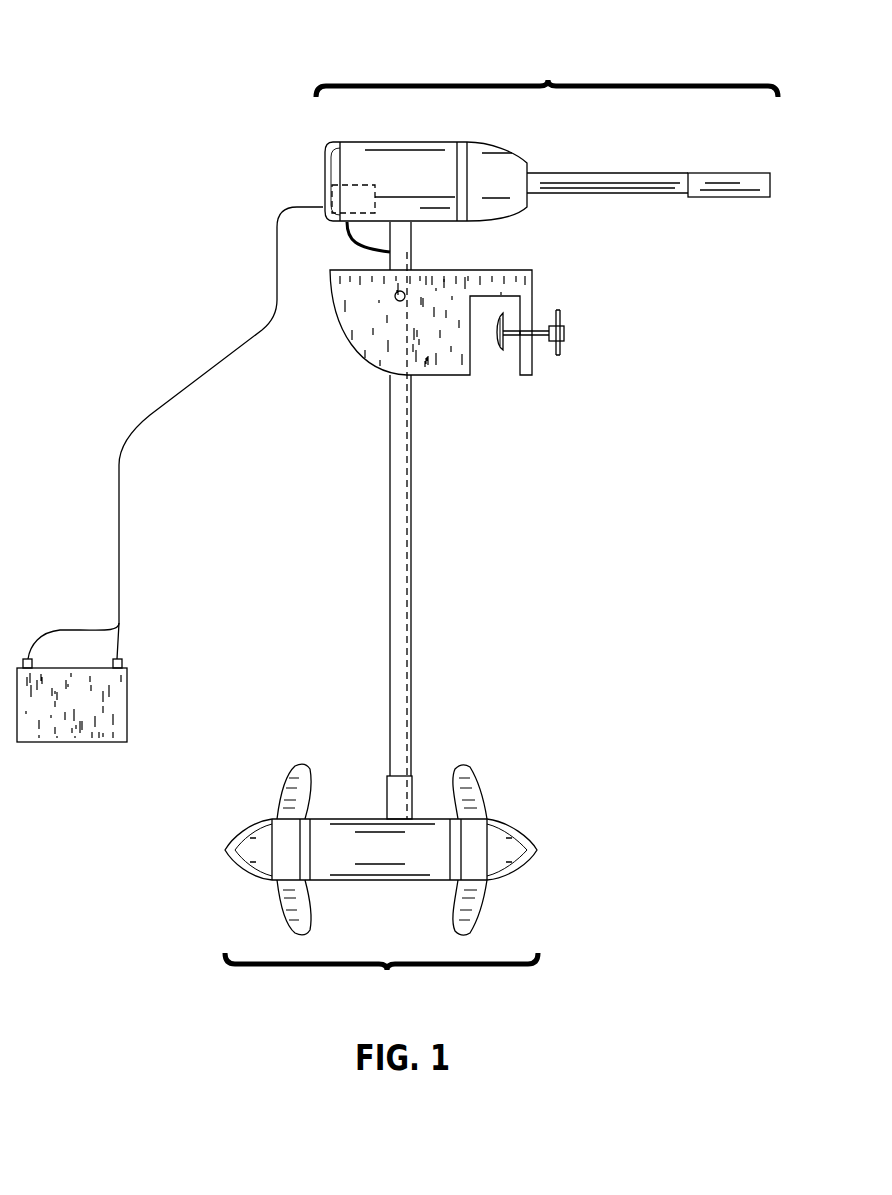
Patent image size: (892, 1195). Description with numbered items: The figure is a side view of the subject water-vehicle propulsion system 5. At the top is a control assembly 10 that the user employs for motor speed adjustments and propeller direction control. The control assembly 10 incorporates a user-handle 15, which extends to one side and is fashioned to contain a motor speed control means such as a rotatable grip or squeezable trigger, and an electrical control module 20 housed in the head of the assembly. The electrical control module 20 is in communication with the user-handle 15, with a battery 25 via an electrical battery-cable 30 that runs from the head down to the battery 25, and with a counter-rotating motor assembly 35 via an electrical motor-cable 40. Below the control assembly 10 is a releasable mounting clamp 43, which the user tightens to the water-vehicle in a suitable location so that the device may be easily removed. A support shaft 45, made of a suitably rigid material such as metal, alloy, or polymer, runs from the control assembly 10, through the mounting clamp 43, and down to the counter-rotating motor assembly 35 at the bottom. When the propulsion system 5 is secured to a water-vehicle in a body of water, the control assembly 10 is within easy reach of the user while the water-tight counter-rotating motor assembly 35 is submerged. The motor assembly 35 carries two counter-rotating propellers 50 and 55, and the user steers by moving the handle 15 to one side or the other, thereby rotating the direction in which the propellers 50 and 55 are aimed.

The propulsion system 5 is at (124, 46).
The control assembly 10 is at (547, 72).
The user-handle 15 is at (727, 197).
The electrical control module 20 is at (422, 167).
The battery 25 is at (58, 745).
The electrical battery-cable 30 is at (218, 352).
The counter-rotating motor assembly 35 is at (381, 912).
The electrical motor-cable 40 is at (357, 246).
The releasable mounting clamp 43 is at (441, 360).
The support shaft 45 is at (389, 542).
The counter-rotating propeller 50 is at (482, 783).
The counter-rotating propeller 55 is at (286, 783).